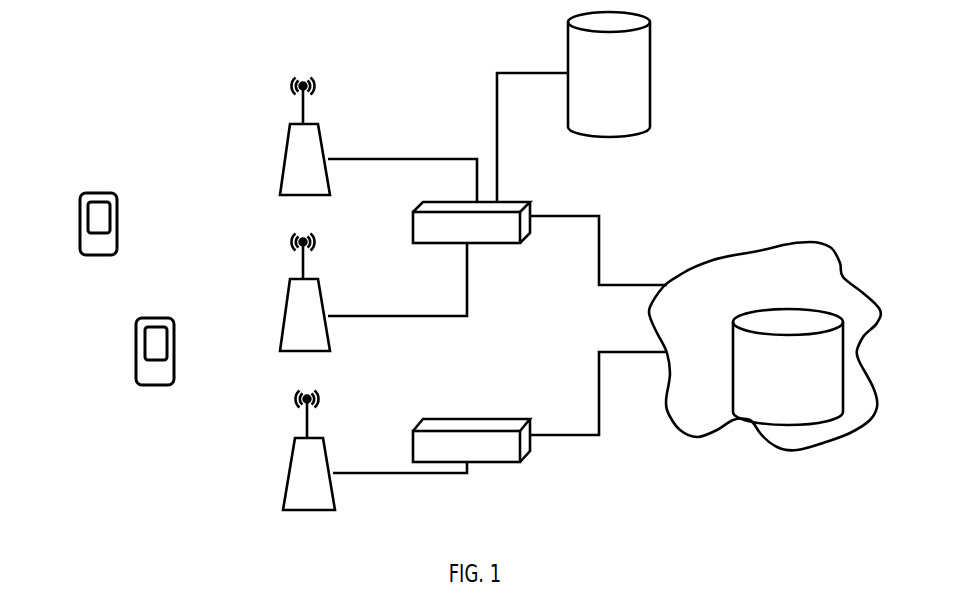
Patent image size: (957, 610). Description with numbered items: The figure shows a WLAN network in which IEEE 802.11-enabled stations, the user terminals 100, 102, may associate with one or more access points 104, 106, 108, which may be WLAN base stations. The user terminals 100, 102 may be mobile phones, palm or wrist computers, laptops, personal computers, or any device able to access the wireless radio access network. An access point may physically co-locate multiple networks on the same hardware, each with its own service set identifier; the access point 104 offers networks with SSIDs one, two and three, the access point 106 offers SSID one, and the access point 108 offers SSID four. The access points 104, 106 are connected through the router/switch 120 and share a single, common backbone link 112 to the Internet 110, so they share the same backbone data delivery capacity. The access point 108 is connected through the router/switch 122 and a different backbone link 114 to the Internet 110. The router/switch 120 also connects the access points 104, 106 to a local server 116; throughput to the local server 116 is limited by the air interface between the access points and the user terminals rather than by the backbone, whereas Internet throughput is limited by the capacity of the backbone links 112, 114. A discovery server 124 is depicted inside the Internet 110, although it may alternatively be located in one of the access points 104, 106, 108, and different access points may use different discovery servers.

The user terminal 100 is at (95, 193).
The user terminal 102 is at (152, 318).
The access point 104 is at (320, 134).
The access point 106 is at (320, 291).
The access point 108 is at (325, 451).
The Internet 110 is at (765, 346).
The backbone link 112 is at (576, 216).
The backbone link 114 is at (553, 436).
The local server 116 is at (573, 107).
The router/switch 120 is at (499, 244).
The router/switch 122 is at (507, 463).
The discovery server 124 is at (788, 367).